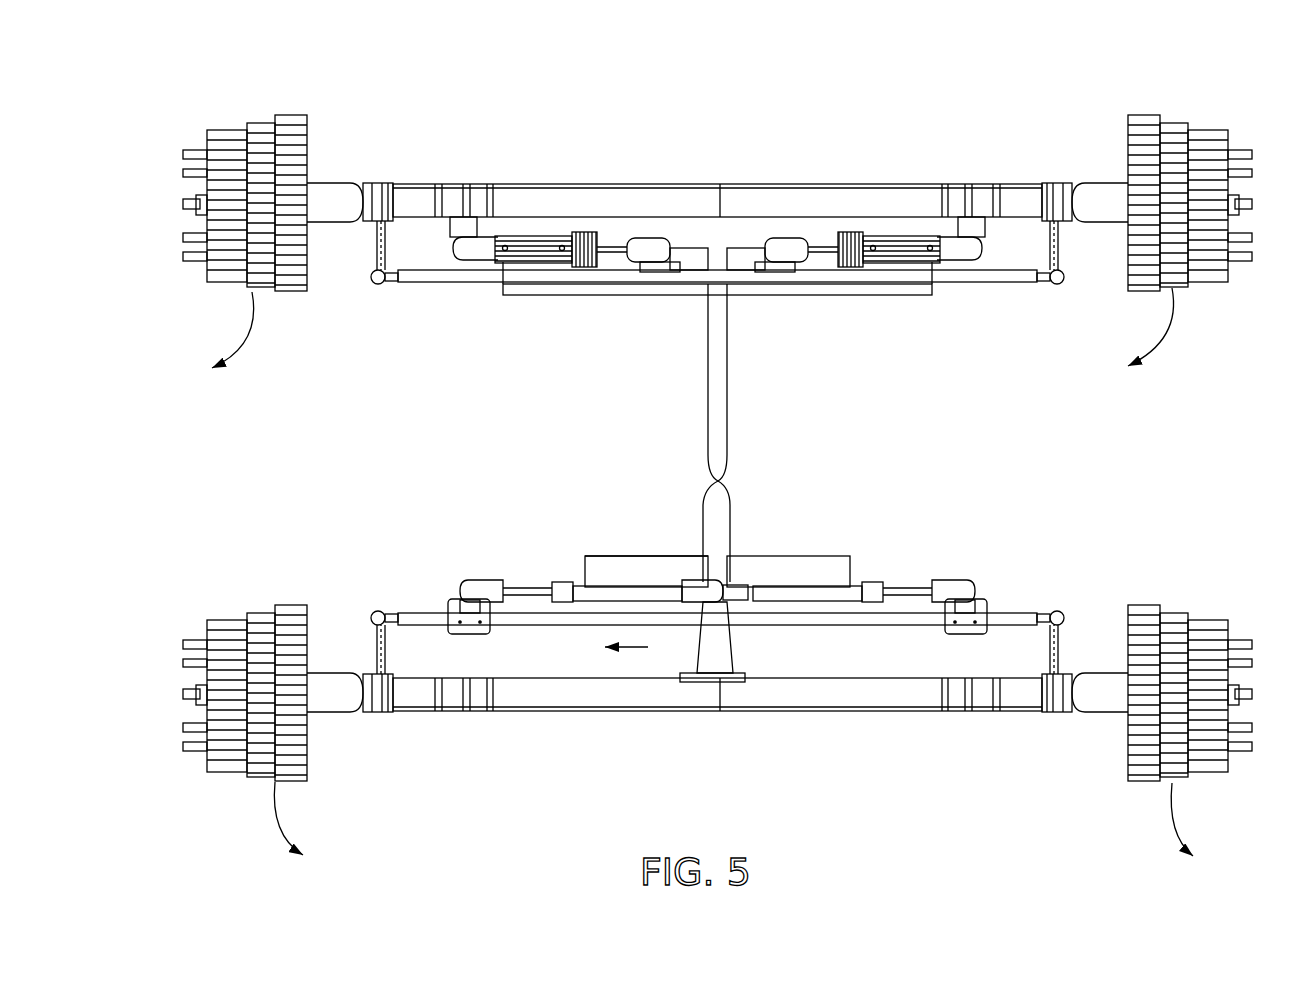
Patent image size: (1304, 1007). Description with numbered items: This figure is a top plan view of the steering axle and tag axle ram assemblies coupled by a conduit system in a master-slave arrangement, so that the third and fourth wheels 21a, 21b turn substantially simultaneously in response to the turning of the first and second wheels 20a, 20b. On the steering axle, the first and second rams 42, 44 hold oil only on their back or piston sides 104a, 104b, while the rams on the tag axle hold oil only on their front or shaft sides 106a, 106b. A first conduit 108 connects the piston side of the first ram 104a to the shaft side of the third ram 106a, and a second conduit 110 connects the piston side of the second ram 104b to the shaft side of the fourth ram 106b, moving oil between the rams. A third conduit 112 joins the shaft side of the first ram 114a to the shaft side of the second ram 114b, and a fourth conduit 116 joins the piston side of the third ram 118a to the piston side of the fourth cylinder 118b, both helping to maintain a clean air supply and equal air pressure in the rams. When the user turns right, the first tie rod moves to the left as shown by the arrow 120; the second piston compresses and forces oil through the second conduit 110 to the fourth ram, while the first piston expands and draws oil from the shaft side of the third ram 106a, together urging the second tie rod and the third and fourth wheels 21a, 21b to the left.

The first wheel 20a is at (1228, 633).
The second wheel 20b is at (207, 633).
The third wheel 21a is at (1228, 142).
The fourth wheel 21b is at (207, 140).
The first ram 42 is at (602, 582).
The second ram 44 is at (835, 556).
The piston side of the first ram 104a is at (663, 586).
The piston side of the second ram 104b is at (757, 586).
The shaft side of the third ram 106a is at (852, 232).
The shaft side of the fourth ram 106b is at (582, 232).
The first conduit 108 is at (728, 366).
The second conduit 110 is at (707, 368).
The third conduit 112 is at (642, 556).
The shaft side of the first ram 114a is at (563, 582).
The shaft side of the second ram 114b is at (872, 582).
The fourth conduit 116 is at (870, 296).
The piston side of the third ram 118a is at (930, 236).
The piston side of the fourth cylinder 118b is at (505, 236).
The arrow 120 is at (650, 649).